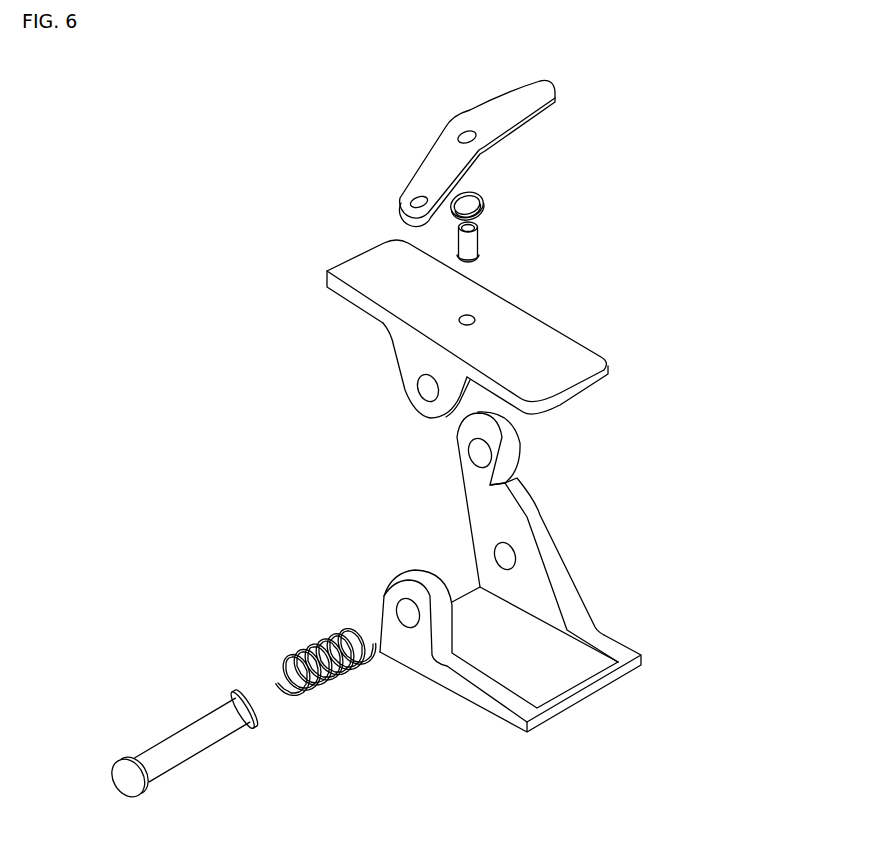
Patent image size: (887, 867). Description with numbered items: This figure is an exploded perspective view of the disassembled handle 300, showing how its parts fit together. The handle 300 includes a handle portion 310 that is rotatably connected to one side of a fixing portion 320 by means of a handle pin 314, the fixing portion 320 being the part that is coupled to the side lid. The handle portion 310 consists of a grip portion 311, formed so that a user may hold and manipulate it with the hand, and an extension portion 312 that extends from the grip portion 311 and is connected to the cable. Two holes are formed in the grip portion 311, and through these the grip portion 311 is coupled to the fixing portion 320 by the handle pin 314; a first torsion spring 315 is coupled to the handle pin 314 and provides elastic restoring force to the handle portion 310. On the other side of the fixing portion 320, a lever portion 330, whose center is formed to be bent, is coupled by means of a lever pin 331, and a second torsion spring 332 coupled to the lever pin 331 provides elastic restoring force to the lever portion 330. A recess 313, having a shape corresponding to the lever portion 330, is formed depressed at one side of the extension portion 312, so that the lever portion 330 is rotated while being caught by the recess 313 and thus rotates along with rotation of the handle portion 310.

The handle 300 is at (160, 247).
The handle portion 310 is at (572, 682).
The grip portion 311 is at (488, 684).
The extension portion 312 is at (483, 523).
The recess 313 is at (508, 484).
The handle pin 314 is at (185, 742).
The first torsion spring 315 is at (328, 636).
The fixing portion 320 is at (384, 272).
The lever portion 330 is at (496, 111).
The lever pin 331 is at (476, 244).
The second torsion spring 332 is at (484, 196).